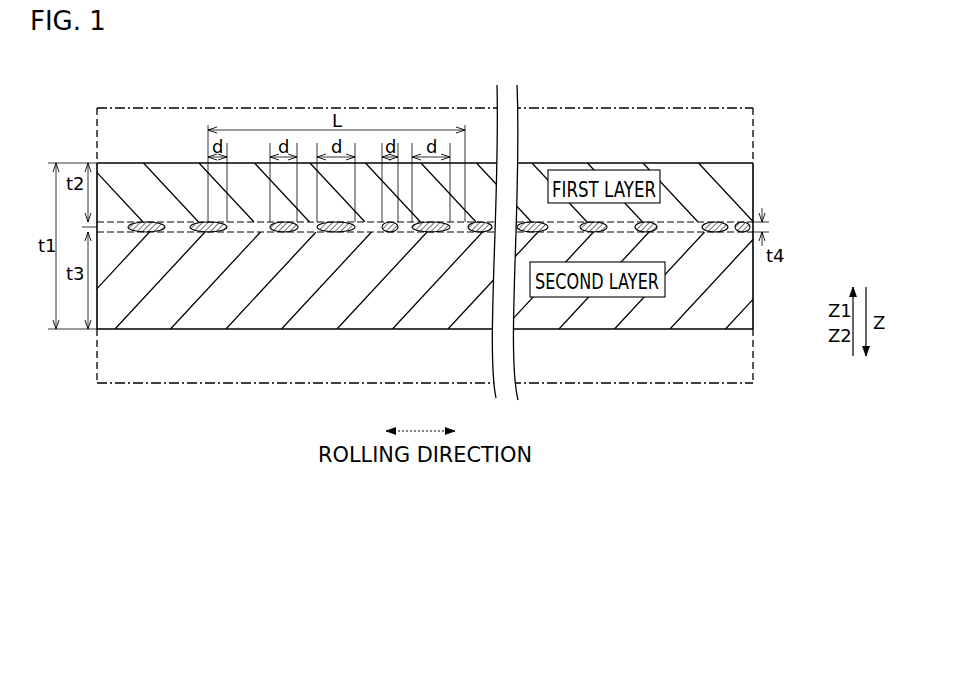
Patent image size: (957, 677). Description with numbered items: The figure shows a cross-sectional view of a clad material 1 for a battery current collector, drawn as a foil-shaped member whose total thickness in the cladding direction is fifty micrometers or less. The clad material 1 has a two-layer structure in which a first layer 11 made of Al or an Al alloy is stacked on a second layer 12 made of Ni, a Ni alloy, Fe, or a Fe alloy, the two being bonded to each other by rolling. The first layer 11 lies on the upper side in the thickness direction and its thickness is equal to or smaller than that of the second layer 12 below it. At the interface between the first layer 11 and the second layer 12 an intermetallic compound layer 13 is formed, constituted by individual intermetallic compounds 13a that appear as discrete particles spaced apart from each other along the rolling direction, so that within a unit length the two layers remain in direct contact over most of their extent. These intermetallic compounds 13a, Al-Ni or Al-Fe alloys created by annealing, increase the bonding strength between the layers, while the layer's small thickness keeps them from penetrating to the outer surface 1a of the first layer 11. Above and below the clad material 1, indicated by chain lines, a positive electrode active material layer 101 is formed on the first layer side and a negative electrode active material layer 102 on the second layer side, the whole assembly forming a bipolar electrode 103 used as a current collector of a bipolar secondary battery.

The clad material 1 is at (816, 172).
The outer surface 1a is at (697, 162).
The first layer 11 is at (713, 183).
The second layer 12 is at (713, 290).
The intermetallic compound layer 13 is at (663, 221).
The intermetallic compounds 13a is at (147, 221).
The positive electrode active material layer 101 is at (756, 128).
The negative electrode active material layer 102 is at (757, 382).
The bipolar electrode 103 is at (471, 225).